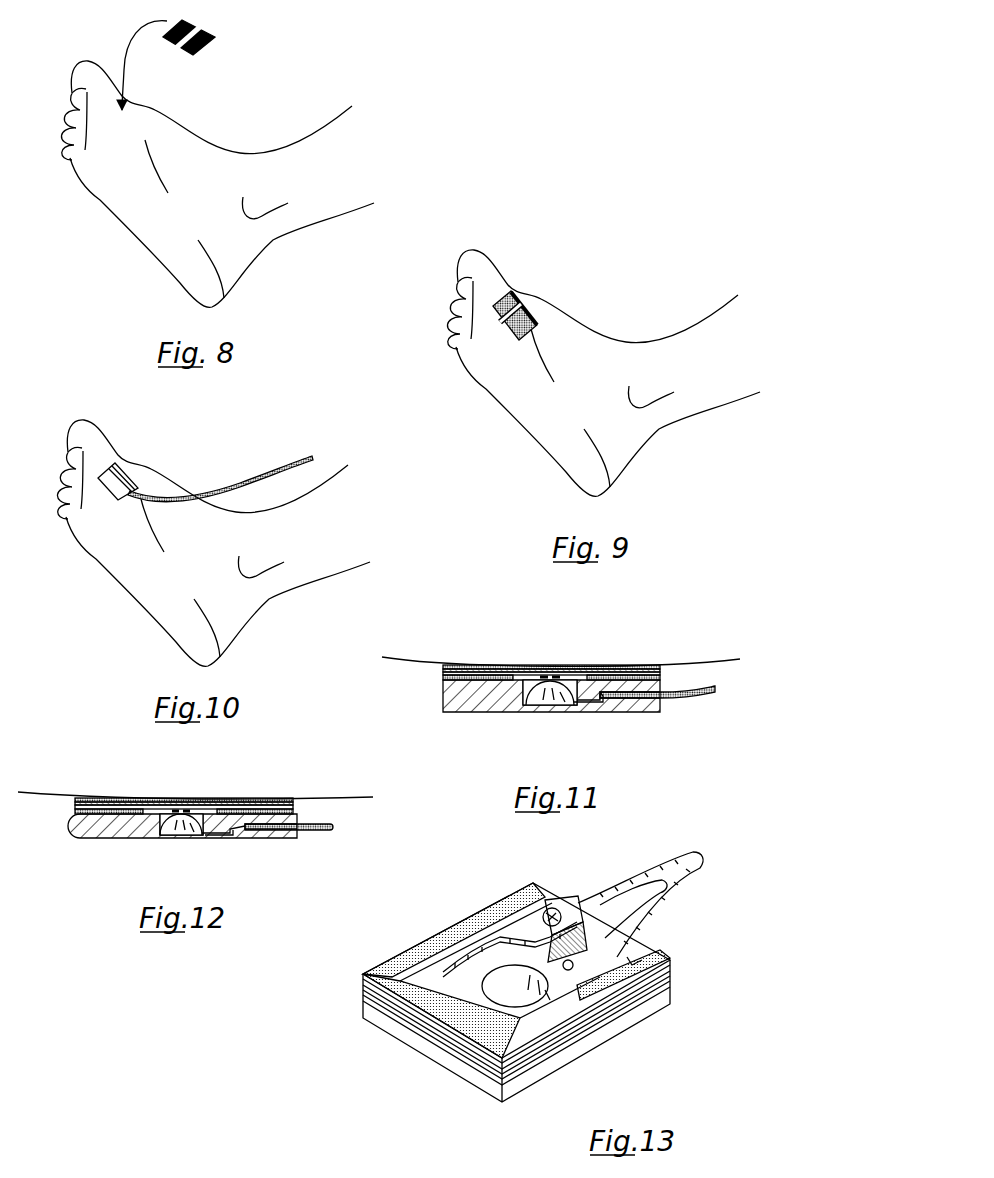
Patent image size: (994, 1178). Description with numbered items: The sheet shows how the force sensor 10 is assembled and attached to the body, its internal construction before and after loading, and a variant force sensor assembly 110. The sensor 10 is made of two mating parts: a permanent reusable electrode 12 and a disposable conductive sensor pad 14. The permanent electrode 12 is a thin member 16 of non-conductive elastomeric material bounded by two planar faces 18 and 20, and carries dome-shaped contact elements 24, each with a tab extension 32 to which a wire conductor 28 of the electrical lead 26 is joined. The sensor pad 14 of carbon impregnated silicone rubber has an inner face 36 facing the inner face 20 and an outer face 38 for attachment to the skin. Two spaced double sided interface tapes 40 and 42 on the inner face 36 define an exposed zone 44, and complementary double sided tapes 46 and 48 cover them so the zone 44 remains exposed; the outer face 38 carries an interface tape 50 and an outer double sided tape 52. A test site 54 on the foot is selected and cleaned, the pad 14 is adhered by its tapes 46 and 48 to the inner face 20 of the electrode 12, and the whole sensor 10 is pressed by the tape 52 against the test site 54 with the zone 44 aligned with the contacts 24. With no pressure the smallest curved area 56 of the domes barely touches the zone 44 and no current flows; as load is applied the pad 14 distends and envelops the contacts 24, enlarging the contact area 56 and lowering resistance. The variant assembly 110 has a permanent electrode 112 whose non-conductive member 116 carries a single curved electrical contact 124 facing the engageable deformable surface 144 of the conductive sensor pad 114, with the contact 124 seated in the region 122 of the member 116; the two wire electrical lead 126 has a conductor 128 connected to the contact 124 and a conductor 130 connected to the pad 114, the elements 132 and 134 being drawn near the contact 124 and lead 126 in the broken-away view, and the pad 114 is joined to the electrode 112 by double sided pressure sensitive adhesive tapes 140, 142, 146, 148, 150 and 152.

In FIG. 10, the force sensor 10 is at (205, 453).
In FIG. 11, the force sensor 10 is at (700, 607).
In FIG. 12, the force sensor 10 is at (66, 751).
In FIG. 10, the permanent electrode 12 is at (125, 480).
In FIG. 11, the permanent electrode 12 is at (544, 694).
In FIG. 12, the permanent electrode 12 is at (172, 827).
In FIG. 8, the conductive sensor pad 14 is at (221, 60).
In FIG. 9, the conductive sensor pad 14 is at (538, 298).
In FIG. 10, the conductive sensor pad 14 is at (120, 452).
In FIG. 11, the conductive sensor pad 14 is at (547, 664).
In FIG. 12, the conductive sensor pad 14 is at (183, 799).
In FIG. 11, the member 16 is at (445, 708).
In FIG. 12, the member 16 is at (78, 833).
In FIG. 11, the face 18 is at (482, 713).
In FIG. 12, the face 18 is at (105, 838).
In FIG. 11, the inner face 20 is at (637, 703).
In FIG. 12, the inner face 20 is at (260, 829).
In FIG. 11, the contact elements 24 is at (540, 704).
In FIG. 12, the contact elements 24 is at (170, 837).
In FIG. 10, the electrical lead 26 is at (220, 483).
In FIG. 11, the electrical lead 26 is at (707, 697).
In FIG. 12, the electrical lead 26 is at (310, 831).
In FIG. 11, the electrical wire conductor 28 is at (603, 699).
In FIG. 12, the electrical wire conductor 28 is at (240, 836).
In FIG. 11, the extension 32 is at (574, 713).
In FIG. 12, the extension 32 is at (222, 838).
In FIG. 11, the inner face 36 is at (532, 703).
In FIG. 12, the inner face 36 is at (163, 833).
In FIG. 11, the outer face 38 is at (612, 668).
In FIG. 12, the outer face 38 is at (243, 800).
In FIG. 11, the double sided adhesive interface tape 40 is at (447, 675).
In FIG. 12, the double sided adhesive interface tape 40 is at (72, 805).
In FIG. 11, the double sided adhesive interface tape 42 is at (660, 677).
In FIG. 12, the double sided adhesive interface tape 42 is at (293, 805).
In FIG. 8, the exposed zone 44 is at (203, 29).
In FIG. 9, the exposed zone 44 is at (511, 316).
In FIG. 8, the double sided tape 46 is at (212, 34).
In FIG. 9, the double sided tape 46 is at (536, 322).
In FIG. 11, the double sided tape 46 is at (445, 680).
In FIG. 12, the double sided tape 46 is at (75, 813).
In FIG. 8, the double sided tape 48 is at (187, 22).
In FIG. 9, the double sided tape 48 is at (500, 300).
In FIG. 11, the double sided tape 48 is at (660, 680).
In FIG. 12, the double sided tape 48 is at (293, 813).
In FIG. 8, the double sided adhesive interface tape 50 is at (173, 22).
In FIG. 9, the double sided adhesive interface tape 50 is at (510, 297).
In FIG. 11, the double sided adhesive interface tape 50 is at (445, 667).
In FIG. 12, the double sided adhesive interface tape 50 is at (75, 800).
In FIG. 8, the outer double sided tape 52 is at (186, 44).
In FIG. 9, the outer double sided tape 52 is at (514, 300).
In FIG. 11, the outer double sided tape 52 is at (502, 666).
In FIG. 12, the outer double sided tape 52 is at (123, 800).
In FIG. 8, the test site 54 is at (118, 120).
In FIG. 9, the test site 54 is at (534, 327).
In FIG. 10, the test site 54 is at (127, 497).
In FIG. 11, the curved area of contact 56 is at (544, 678).
In FIG. 12, the curved area of contact 56 is at (177, 807).
In FIG. 13, the force sensor assembly 110 is at (454, 907).
In FIG. 13, the permanent electrode 112 is at (525, 1000).
In FIG. 13, the sensor pad 114 is at (412, 939).
In FIG. 13, the non-conductive member 116 is at (443, 1053).
In FIG. 13, the recess 122 is at (563, 1026).
In FIG. 13, the electrical contact 124 is at (519, 994).
In FIG. 13, the two wire electrical lead 126 is at (701, 866).
In FIG. 13, the conductor 128 is at (606, 908).
In FIG. 13, the conductor 130 is at (563, 907).
In FIG. 13, the conductive tape 132 is at (561, 983).
In FIG. 13, the contact point 134 is at (574, 958).
In FIG. 13, the double sided pressure sensitive adhesive tape 140 is at (363, 993).
In FIG. 13, the double sided pressure sensitive adhesive tape 142 is at (672, 973).
In FIG. 13, the engageable deformable surface 144 is at (610, 1010).
In FIG. 13, the double sided pressure sensitive adhesive tape 146 is at (363, 996).
In FIG. 13, the double sided pressure sensitive adhesive tape 148 is at (673, 983).
In FIG. 13, the double sided pressure sensitive adhesive tape 150 is at (671, 965).
In FIG. 13, the double sided pressure sensitive adhesive tape 152 is at (661, 953).